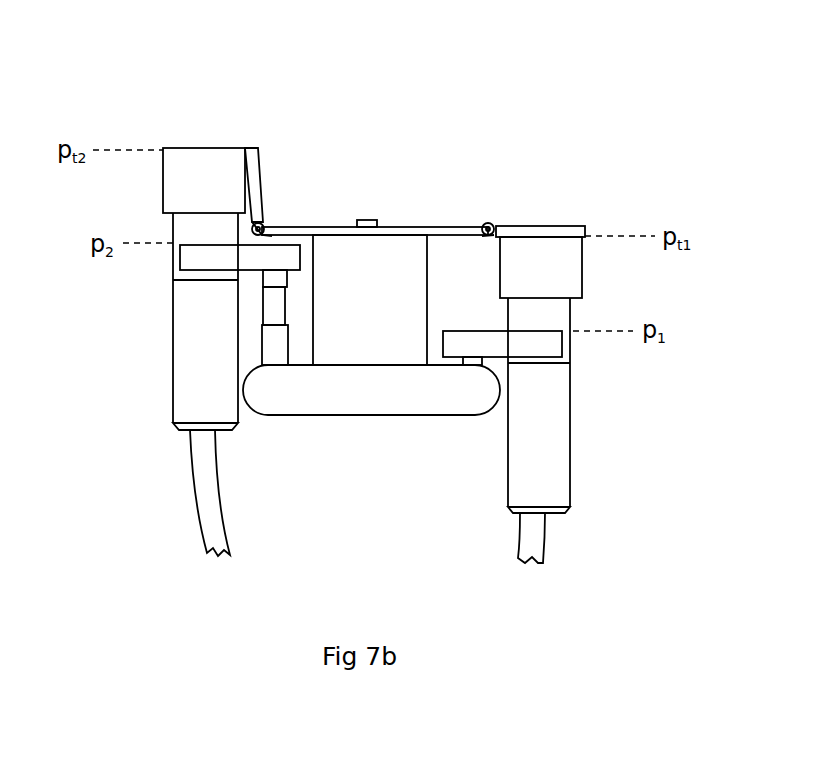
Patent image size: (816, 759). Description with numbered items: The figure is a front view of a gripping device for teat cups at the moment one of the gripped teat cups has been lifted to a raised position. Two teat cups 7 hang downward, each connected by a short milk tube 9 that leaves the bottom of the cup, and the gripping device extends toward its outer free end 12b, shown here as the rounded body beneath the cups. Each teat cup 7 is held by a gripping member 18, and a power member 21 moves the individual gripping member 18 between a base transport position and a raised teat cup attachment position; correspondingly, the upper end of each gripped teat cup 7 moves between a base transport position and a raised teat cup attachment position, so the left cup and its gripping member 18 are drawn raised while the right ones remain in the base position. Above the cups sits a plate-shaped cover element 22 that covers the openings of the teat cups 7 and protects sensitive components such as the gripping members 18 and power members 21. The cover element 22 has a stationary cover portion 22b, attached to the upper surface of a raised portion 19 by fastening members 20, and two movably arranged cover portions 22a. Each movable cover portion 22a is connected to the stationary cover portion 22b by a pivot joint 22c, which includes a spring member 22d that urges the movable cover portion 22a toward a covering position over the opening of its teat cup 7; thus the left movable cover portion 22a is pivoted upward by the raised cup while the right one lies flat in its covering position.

The teat cup 7 is at (197, 348).
The short milk tube 9 is at (203, 485).
The outer free end 12b is at (368, 395).
The gripping member 18 is at (208, 257).
The raised portion 19 is at (386, 309).
The fastening member 20 is at (373, 218).
The power member 21 is at (277, 338).
The cover element 22 is at (402, 175).
The movable cover portion 22a is at (258, 187).
The stationary cover portion 22b is at (443, 238).
The pivot joint 22c is at (263, 223).
The spring member 22d is at (261, 219).